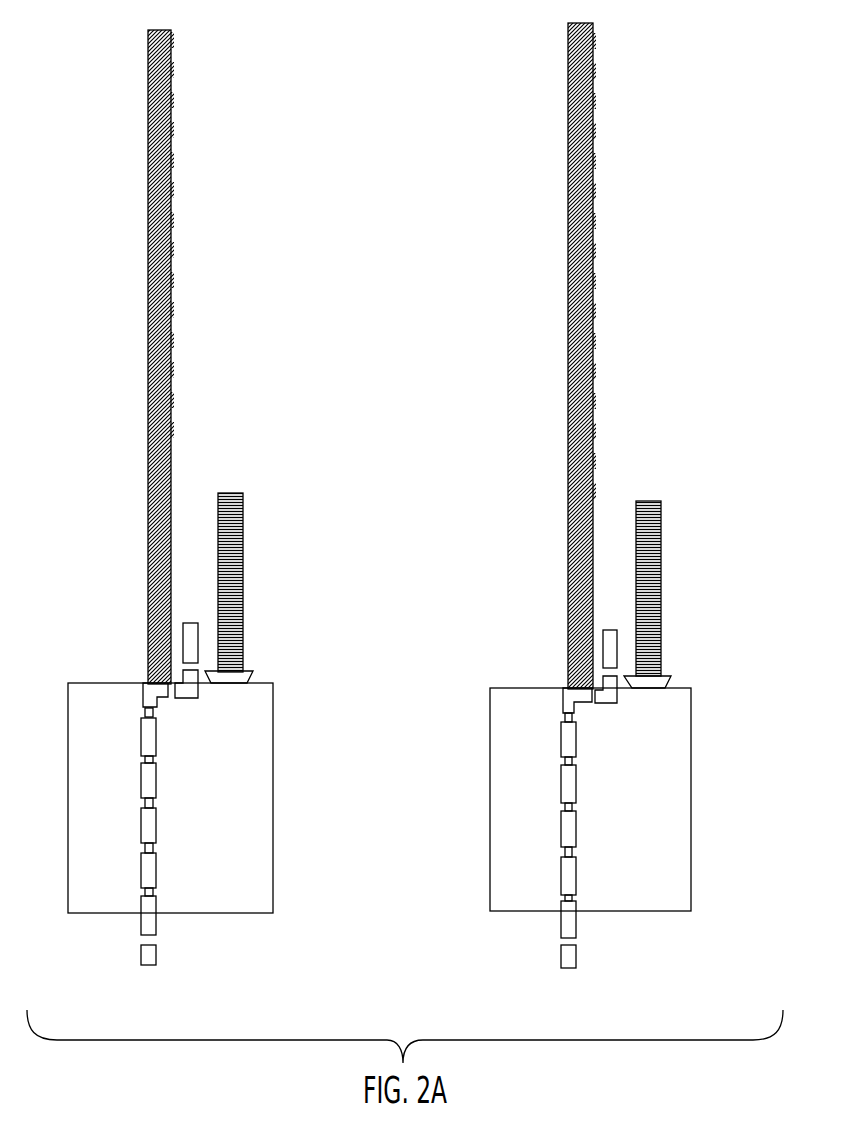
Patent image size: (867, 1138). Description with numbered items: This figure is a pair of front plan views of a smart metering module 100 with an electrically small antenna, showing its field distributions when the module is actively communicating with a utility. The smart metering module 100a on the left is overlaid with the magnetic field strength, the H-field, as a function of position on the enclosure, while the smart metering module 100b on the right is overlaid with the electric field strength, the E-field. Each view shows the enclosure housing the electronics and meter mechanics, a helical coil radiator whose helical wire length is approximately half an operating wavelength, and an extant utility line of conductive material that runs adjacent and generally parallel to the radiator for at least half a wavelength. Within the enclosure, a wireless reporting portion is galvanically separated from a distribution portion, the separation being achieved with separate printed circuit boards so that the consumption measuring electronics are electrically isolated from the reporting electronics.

The smart metering module 100 is at (427, 89).
The smart metering module (H-field view) 100a is at (113, 346).
The smart metering module (E-field view) 100b is at (674, 357).